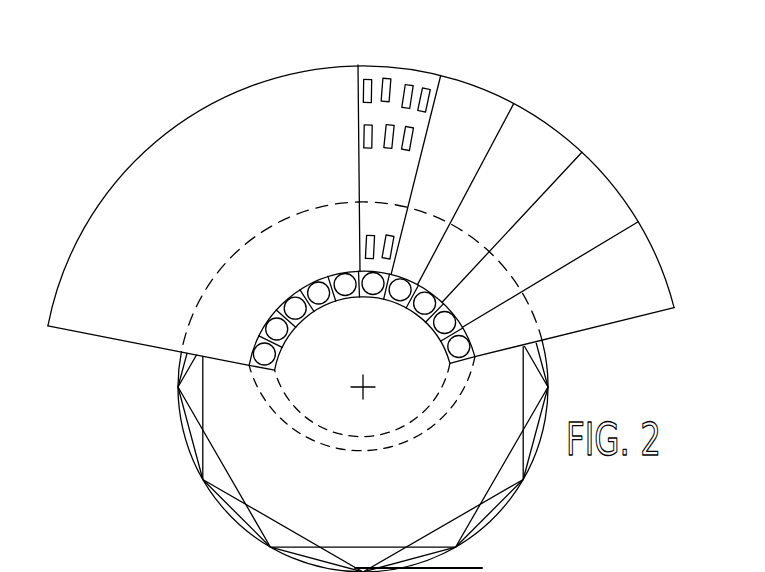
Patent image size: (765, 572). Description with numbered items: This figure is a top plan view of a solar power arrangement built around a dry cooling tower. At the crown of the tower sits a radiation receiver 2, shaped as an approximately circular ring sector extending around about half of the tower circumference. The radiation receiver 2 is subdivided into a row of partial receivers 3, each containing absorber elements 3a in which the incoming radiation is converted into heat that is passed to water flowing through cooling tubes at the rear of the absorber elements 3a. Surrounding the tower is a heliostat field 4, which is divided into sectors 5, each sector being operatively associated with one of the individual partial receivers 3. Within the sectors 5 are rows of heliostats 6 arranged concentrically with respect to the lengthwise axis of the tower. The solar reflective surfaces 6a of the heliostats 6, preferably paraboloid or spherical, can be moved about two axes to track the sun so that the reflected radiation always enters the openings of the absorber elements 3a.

The radiation receiver 2 is at (290, 333).
The partial receivers 3 is at (433, 323).
The absorber elements 3a is at (445, 302).
The heliostat field 4 is at (658, 251).
The sectors 5 is at (483, 102).
The heliostats 6 is at (368, 78).
The solar reflective surfaces 6a is at (362, 135).